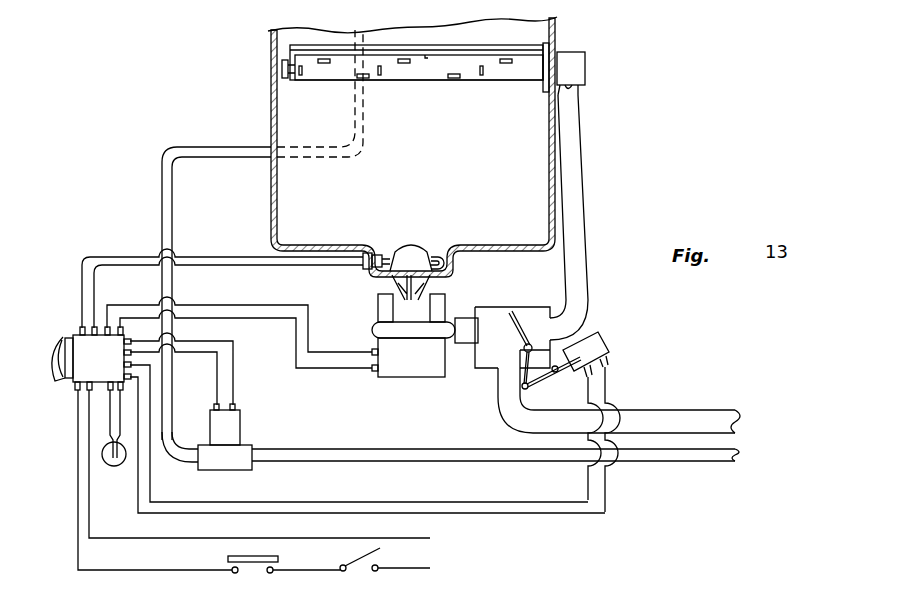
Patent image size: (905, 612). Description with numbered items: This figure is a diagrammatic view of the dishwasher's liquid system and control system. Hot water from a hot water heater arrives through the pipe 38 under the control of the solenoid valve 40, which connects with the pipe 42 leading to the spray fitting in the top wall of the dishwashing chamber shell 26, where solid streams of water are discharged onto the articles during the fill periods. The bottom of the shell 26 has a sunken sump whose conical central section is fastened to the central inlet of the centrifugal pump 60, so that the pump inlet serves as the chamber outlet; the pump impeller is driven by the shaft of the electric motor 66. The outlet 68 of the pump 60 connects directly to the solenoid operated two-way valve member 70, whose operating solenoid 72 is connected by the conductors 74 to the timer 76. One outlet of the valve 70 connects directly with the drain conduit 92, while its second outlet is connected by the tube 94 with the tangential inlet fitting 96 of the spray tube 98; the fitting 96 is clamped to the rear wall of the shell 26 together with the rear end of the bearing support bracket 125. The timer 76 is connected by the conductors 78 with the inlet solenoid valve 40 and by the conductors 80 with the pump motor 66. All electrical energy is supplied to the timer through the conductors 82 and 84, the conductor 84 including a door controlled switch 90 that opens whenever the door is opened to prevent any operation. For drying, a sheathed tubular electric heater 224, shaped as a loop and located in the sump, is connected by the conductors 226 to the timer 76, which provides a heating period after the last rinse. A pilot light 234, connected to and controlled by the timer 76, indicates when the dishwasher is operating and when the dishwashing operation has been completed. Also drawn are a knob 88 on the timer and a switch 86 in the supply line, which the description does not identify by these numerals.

The dishwashing chamber shell 26 is at (558, 33).
The tangential inlet fitting 96 is at (580, 63).
The spray tube 98 is at (426, 78).
The pipe 42 is at (190, 158).
The electric heater 224 is at (437, 256).
The conductors 226 is at (125, 264).
The conductors 80 is at (235, 317).
The conductors 78 is at (218, 374).
The timer 76 is at (73, 333).
The knob 88 is at (56, 378).
The pilot light 234 is at (112, 466).
The solenoid valve 40 is at (240, 425).
The pipe 38 is at (665, 462).
The centrifugal pump 60 is at (375, 325).
The outlet 68 is at (456, 320).
The electric motor 66 is at (395, 378).
The two-way valve member 70 is at (510, 310).
The operating solenoid 72 is at (601, 345).
The conductors 74 is at (503, 511).
The tube 94 is at (590, 267).
The drain conduit 92 is at (670, 410).
The conductor 82 is at (431, 539).
The door controlled switch 90 is at (255, 563).
The switch 86 is at (363, 563).
The conductor 84 is at (430, 569).
The bearing support bracket 125 is at (547, 609).